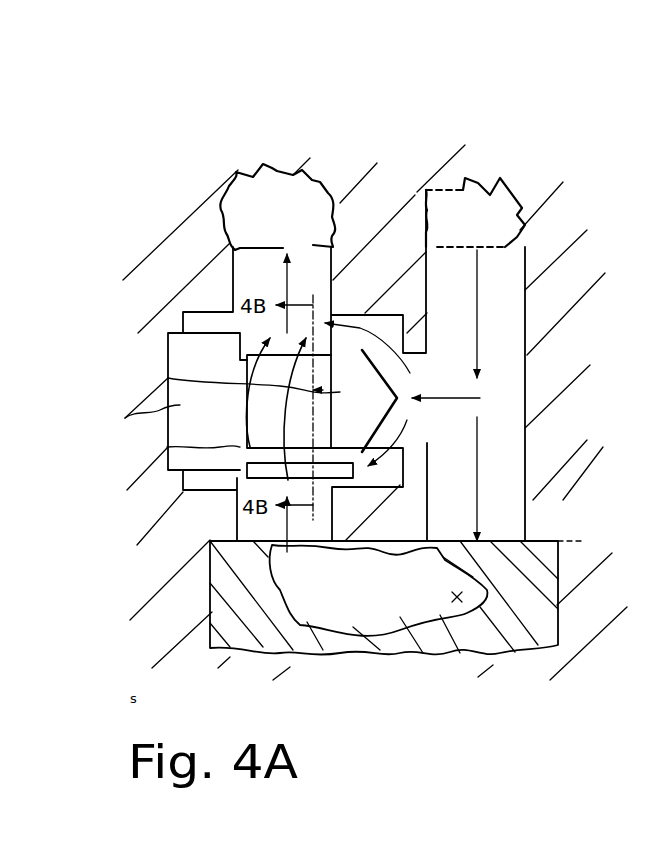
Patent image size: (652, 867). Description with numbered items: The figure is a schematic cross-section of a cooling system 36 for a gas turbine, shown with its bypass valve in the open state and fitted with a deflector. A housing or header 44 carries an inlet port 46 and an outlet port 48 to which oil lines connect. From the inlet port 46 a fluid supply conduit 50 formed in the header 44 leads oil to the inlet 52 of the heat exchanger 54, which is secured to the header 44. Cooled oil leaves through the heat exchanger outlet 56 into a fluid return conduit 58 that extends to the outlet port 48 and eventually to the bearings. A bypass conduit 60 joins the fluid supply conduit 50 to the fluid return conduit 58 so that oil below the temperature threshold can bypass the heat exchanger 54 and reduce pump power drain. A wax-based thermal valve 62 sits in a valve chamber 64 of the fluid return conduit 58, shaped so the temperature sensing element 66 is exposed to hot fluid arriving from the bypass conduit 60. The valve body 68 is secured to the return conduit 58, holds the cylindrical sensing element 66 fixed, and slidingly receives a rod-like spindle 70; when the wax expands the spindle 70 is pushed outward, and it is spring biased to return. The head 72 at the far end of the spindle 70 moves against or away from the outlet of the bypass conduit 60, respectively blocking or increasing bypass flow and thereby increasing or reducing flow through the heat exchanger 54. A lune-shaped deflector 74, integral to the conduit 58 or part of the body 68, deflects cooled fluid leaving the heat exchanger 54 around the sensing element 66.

The cooling system 36 is at (342, 110).
The housing or header 44 is at (546, 187).
The inlet port 46 is at (444, 213).
The outlet port 48 is at (278, 192).
The fluid supply conduit 50 is at (515, 390).
The inlet of the heat exchanger 52 is at (558, 541).
The heat exchanger 54 is at (377, 608).
The outlet of the heat exchanger 56 is at (250, 540).
The fluid return conduit 58 is at (257, 270).
The bypass conduit 60 is at (440, 353).
The thermal valve 62 is at (215, 332).
The valve chamber 64 is at (305, 353).
The temperature sensing element 66 is at (167, 447).
The body 68 is at (125, 418).
The spindle 70 is at (168, 378).
The head 72 is at (371, 415).
The deflector 74 is at (243, 483).